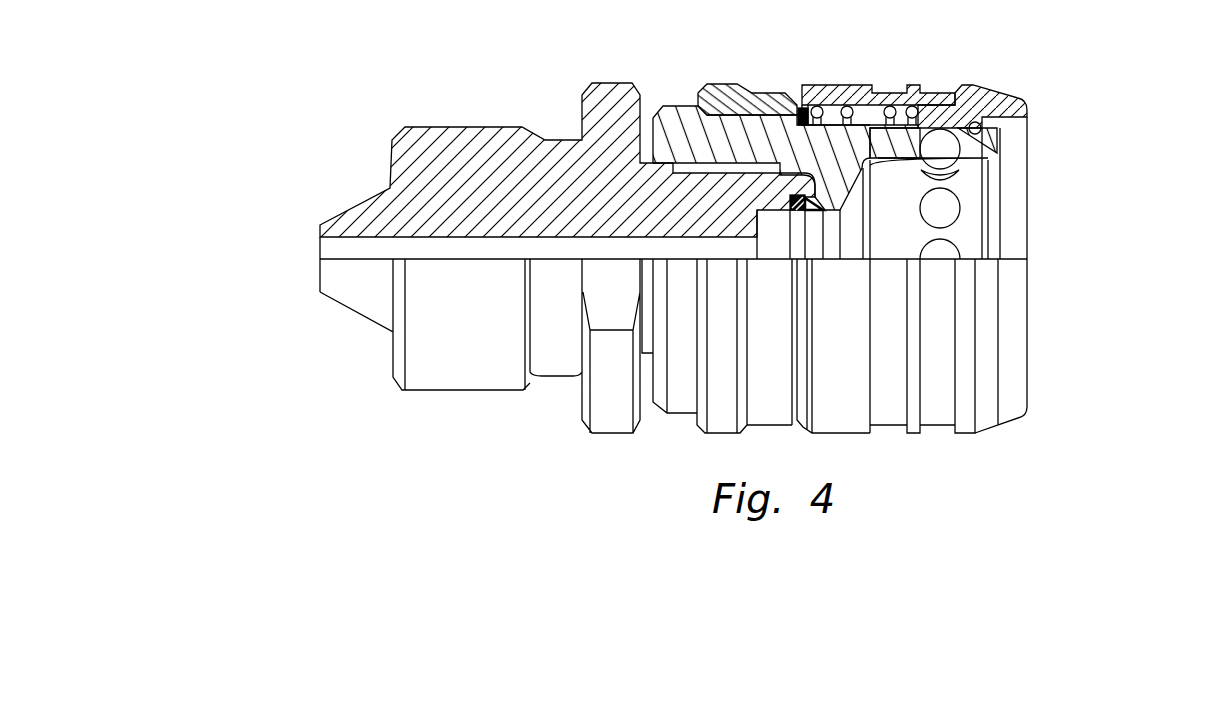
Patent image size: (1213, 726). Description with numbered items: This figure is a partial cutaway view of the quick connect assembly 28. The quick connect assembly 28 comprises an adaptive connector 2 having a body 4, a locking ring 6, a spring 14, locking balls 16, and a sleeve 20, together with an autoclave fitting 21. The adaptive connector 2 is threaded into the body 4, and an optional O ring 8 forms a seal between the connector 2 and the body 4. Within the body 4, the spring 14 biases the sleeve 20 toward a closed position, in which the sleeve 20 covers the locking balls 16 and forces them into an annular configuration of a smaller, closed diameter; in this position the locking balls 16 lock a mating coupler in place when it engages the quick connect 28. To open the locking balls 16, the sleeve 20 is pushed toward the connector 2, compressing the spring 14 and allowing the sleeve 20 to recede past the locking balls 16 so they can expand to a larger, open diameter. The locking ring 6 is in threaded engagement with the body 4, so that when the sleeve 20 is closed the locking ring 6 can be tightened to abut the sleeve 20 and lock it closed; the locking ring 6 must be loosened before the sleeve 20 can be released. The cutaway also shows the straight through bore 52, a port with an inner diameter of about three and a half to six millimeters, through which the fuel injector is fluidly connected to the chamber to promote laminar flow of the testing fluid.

The adaptive connector 2 is at (610, 83).
The body 4 is at (685, 105).
The locking ring 6 is at (715, 83).
The O ring 8 is at (790, 193).
The spring 14 is at (847, 107).
The locking balls 16 is at (942, 128).
The sleeve 20 is at (997, 88).
The autoclave fitting 21 is at (437, 392).
The quick connect assembly 28 is at (1085, 173).
The straight through bore 52 is at (352, 247).